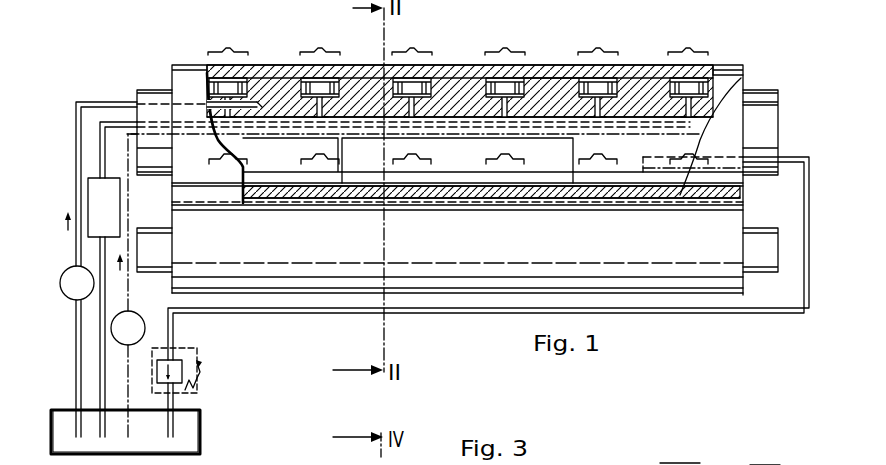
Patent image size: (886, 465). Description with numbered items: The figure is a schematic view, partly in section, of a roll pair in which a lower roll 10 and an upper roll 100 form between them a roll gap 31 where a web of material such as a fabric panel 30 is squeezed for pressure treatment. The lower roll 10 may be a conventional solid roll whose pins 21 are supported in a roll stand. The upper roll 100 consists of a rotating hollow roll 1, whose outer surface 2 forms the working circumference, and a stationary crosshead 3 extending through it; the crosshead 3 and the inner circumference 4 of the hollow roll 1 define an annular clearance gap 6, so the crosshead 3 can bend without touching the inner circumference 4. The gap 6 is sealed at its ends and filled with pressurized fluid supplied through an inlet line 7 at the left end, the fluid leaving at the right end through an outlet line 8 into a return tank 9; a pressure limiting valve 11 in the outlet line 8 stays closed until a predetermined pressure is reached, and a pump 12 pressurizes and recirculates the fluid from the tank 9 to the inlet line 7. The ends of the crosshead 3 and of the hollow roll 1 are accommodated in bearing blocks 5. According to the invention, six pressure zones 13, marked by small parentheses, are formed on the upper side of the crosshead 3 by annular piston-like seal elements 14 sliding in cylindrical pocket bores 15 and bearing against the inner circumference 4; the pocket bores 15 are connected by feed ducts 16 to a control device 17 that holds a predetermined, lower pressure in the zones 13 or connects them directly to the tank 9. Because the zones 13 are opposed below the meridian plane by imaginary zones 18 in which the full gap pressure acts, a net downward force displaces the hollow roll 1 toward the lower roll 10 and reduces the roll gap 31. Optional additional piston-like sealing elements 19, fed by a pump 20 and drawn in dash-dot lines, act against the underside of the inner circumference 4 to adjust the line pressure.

In FIG. 1, the hollow roll 1 is at (645, 67).
In FIG. 1, the outer surface 2 is at (452, 65).
In FIG. 1, the crosshead 3 is at (766, 90).
In FIG. 1, the inner circumference 4 is at (463, 80).
In FIG. 1, the bearing housing 5 is at (160, 90).
In FIG. 1, the clearance gap 6 is at (547, 82).
In FIG. 1, the inlet line 7 is at (277, 78).
In FIG. 1, the outlet line 8 is at (285, 314).
In FIG. 1, the return tank 9 is at (200, 423).
In FIG. 1, the lower roll 10 is at (732, 220).
In FIG. 3, the lower roll 10 is at (680, 453).
In FIG. 1, the pressure limiting valve 11 is at (157, 380).
In FIG. 1, the pump 12 is at (72, 300).
In FIG. 1, the pressure zones 13 is at (233, 47).
In FIG. 1, the annular piston-like seal elements 14 is at (205, 78).
In FIG. 1, the cylindrical pocket bores 15 is at (260, 78).
In FIG. 1, the feed ducts 16 is at (125, 123).
In FIG. 1, the control device 17 is at (111, 216).
In FIG. 1, the imaginary zones 18 is at (320, 155).
In FIG. 1, the additional piston-like sealing elements 19 is at (342, 182).
In FIG. 1, the pump 20 is at (145, 328).
In FIG. 1, the pins 21 is at (760, 262).
In FIG. 3, the pins 21 is at (765, 460).
In FIG. 1, the fabric panel 30 is at (618, 200).
In FIG. 1, the roll gap 31 is at (752, 200).
In FIG. 1, the upper roll 100 is at (740, 60).